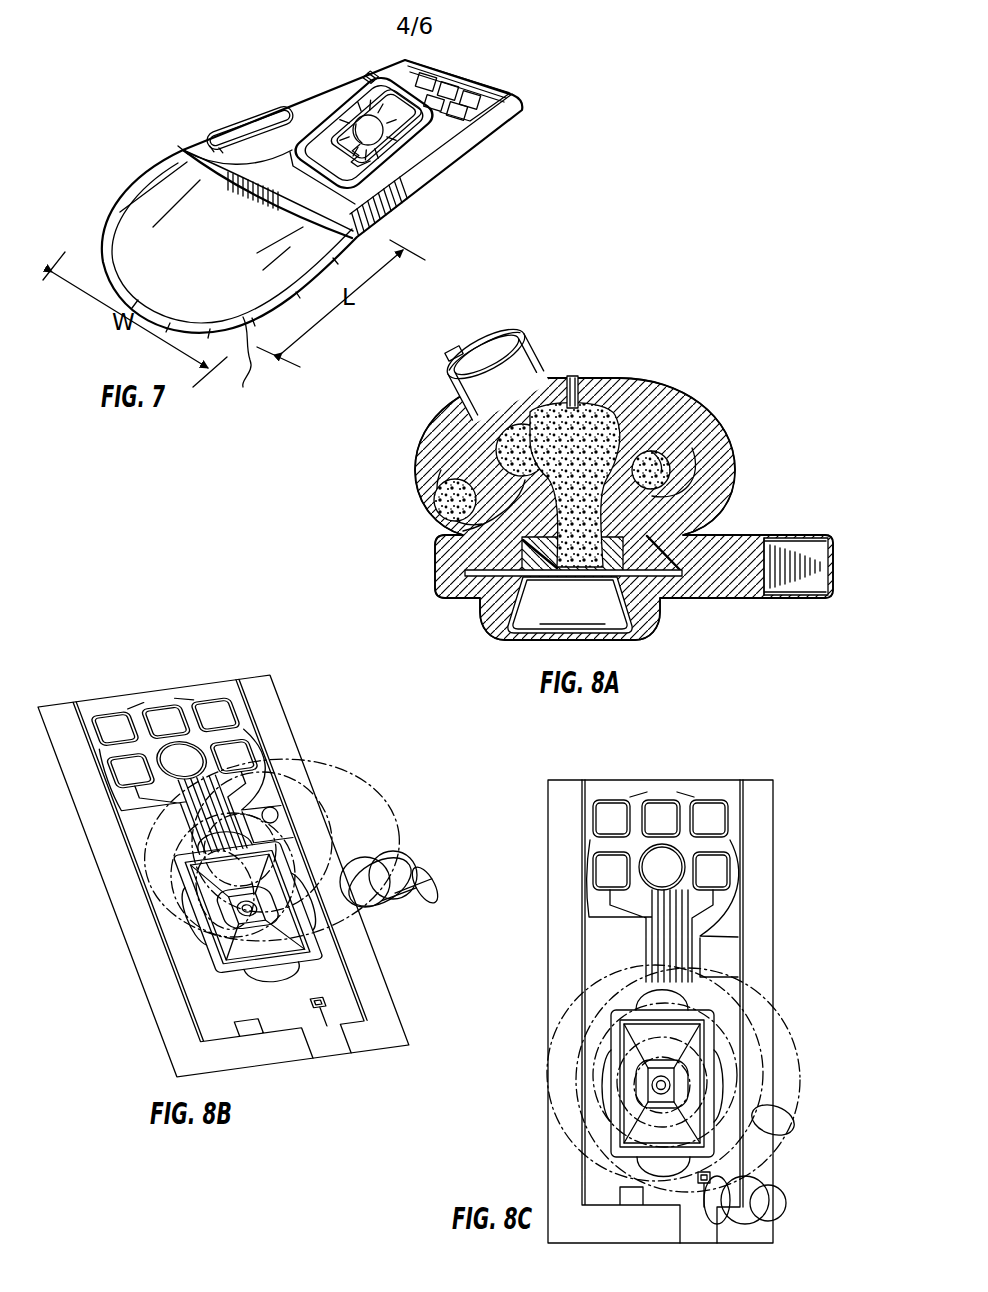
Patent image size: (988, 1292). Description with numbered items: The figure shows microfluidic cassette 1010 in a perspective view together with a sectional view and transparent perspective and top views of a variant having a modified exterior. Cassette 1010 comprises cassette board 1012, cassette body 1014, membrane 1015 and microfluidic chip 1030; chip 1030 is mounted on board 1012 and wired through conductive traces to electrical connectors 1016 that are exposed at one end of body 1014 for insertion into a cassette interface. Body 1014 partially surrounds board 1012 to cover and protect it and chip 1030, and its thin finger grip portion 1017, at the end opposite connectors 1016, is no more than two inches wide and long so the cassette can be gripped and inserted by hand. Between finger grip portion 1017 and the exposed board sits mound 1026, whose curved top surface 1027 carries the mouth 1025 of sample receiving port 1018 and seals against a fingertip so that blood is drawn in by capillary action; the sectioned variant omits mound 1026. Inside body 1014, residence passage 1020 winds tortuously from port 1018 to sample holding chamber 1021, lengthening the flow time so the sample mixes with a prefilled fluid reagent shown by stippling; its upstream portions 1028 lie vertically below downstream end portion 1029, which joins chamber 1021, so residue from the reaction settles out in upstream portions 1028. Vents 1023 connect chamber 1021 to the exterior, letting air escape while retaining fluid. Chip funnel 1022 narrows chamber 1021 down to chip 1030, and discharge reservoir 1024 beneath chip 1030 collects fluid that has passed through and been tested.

In FIG. 7, the microfluidic cassette 1010 is at (143, 90).
In FIG. 8A, the microfluidic cassette 1010 is at (662, 318).
In FIG. 8B, the microfluidic cassette 1010 is at (47, 678).
In FIG. 8C, the microfluidic cassette 1010 is at (779, 758).
In FIG. 7, the cassette board 1012 is at (413, 55).
In FIG. 8B, the cassette board 1012 is at (283, 700).
In FIG. 8C, the cassette board 1012 is at (774, 863).
In FIG. 7, the cassette body 1014 is at (257, 103).
In FIG. 8A, the cassette body 1014 is at (667, 447).
In FIG. 7, the membrane 1015 is at (182, 151).
In FIG. 8A, the membrane 1015 is at (505, 347).
In FIG. 7, the electrical connectors 1016 is at (467, 84).
In FIG. 8B, the electrical connectors 1016 is at (120, 722).
In FIG. 8C, the electrical connectors 1016 is at (705, 810).
In FIG. 7, the finger grip portion 1017 is at (261, 361).
In FIG. 7, the sample receiving port 1018 is at (402, 160).
In FIG. 8A, the sample receiving port 1018 is at (460, 355).
In FIG. 8B, the sample receiving port 1018 is at (430, 843).
In FIG. 8C, the sample receiving port 1018 is at (766, 1185).
In FIG. 8A, the residence passage 1020 is at (492, 445).
In FIG. 8B, the residence passage 1020 is at (148, 868).
In FIG. 8C, the residence passage 1020 is at (805, 1050).
In FIG. 8A, the sample holding chamber 1021 is at (620, 407).
In FIG. 8B, the sample holding chamber 1021 is at (212, 800).
In FIG. 8C, the sample holding chamber 1021 is at (632, 1118).
In FIG. 8A, the chip funnel 1022 is at (492, 600).
In FIG. 8B, the chip funnel 1022 is at (220, 960).
In FIG. 8C, the chip funnel 1022 is at (708, 1022).
In FIG. 7, the vent 1023 is at (373, 77).
In FIG. 8A, the vent 1023 is at (582, 395).
In FIG. 8A, the discharge reservoir 1024 is at (643, 618).
In FIG. 7, the mouth 1025 is at (277, 190).
In FIG. 8A, the mouth 1025 is at (656, 470).
In FIG. 8B, the mouth 1025 is at (425, 866).
In FIG. 8C, the mouth 1025 is at (768, 1198).
In FIG. 7, the mound 1026 is at (318, 105).
In FIG. 7, the top surface 1027 is at (392, 116).
In FIG. 8A, the upstream portions 1028 is at (438, 470).
In FIG. 8A, the downstream end portion 1029 is at (452, 525).
In FIG. 8A, the microfluidic chip 1030 is at (686, 540).
In FIG. 8C, the microfluidic chip 1030 is at (655, 1088).